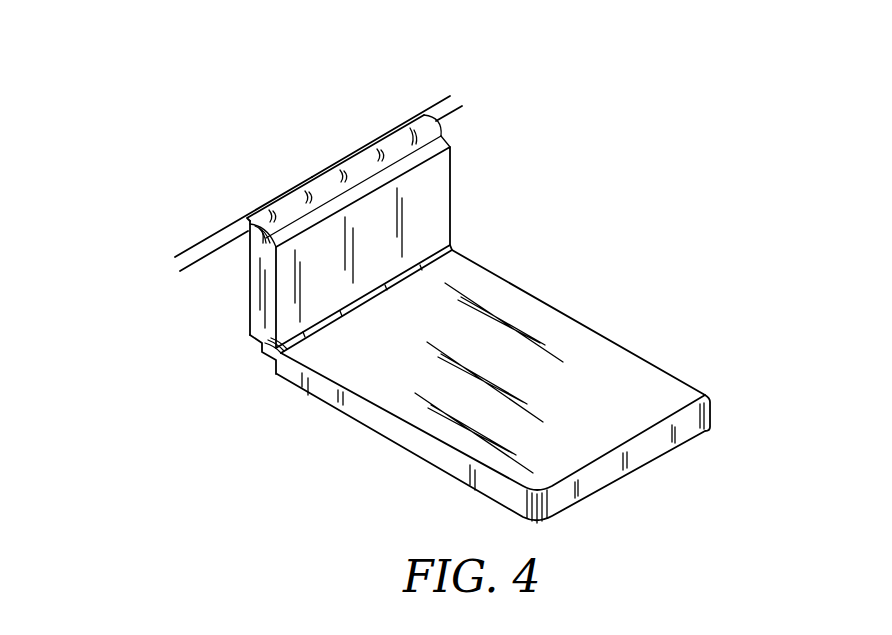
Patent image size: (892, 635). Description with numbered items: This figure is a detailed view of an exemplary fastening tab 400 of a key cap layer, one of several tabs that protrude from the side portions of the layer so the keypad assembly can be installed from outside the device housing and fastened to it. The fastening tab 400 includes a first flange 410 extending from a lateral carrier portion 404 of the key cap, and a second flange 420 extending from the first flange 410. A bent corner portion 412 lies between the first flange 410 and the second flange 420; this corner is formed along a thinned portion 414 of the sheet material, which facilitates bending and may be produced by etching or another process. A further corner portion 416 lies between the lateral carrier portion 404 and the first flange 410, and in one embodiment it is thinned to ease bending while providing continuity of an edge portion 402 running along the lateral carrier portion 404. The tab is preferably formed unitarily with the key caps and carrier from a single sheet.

The fastening tab 400 is at (160, 66).
The edge portion 402 is at (202, 240).
The lateral carrier portion 404 is at (425, 97).
The first flange 410 is at (442, 197).
The bent corner portion 412 is at (452, 250).
The thinned portion 414 is at (266, 353).
The corner portion 416 is at (330, 169).
The second flange 420 is at (631, 358).